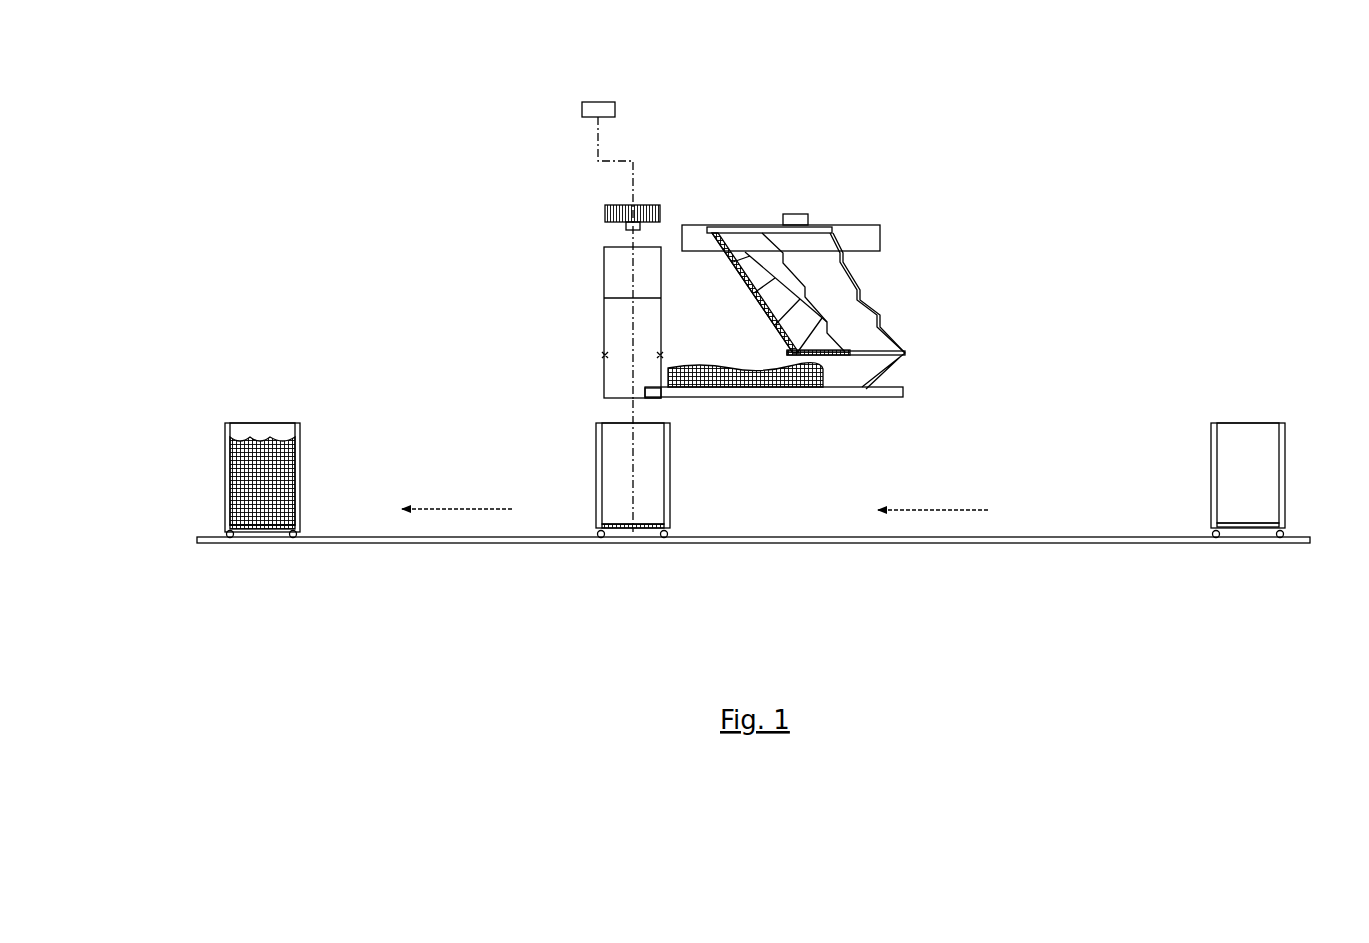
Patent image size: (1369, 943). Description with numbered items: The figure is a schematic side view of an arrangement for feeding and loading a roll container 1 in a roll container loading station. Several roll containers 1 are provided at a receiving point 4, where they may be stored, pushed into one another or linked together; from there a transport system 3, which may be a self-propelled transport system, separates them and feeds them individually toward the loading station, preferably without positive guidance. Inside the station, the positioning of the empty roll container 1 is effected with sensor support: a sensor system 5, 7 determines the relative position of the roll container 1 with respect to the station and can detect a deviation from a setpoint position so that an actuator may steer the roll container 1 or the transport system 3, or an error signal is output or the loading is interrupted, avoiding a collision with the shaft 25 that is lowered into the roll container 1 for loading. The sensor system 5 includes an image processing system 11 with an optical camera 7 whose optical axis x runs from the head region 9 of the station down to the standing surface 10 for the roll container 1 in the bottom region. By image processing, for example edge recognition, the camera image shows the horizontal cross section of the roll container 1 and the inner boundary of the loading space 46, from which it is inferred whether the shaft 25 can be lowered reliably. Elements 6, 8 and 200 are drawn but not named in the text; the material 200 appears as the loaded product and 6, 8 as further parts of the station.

The roll container 1 is at (225, 477).
The transport system 3 is at (348, 430).
The receiving point 4 is at (1272, 374).
The sensor system 5 is at (653, 540).
The lifting device 6 is at (633, 560).
The optical camera 7 is at (612, 213).
The shaft coupling 8 is at (626, 228).
The head region 9 is at (684, 206).
The standing surface 10 is at (615, 530).
The image processing system 11 is at (600, 102).
The shaft 25 is at (604, 320).
The inner boundary of the roll container loading space 46 is at (612, 375).
The material / product 200 is at (753, 270).
The optical axis x is at (633, 281).